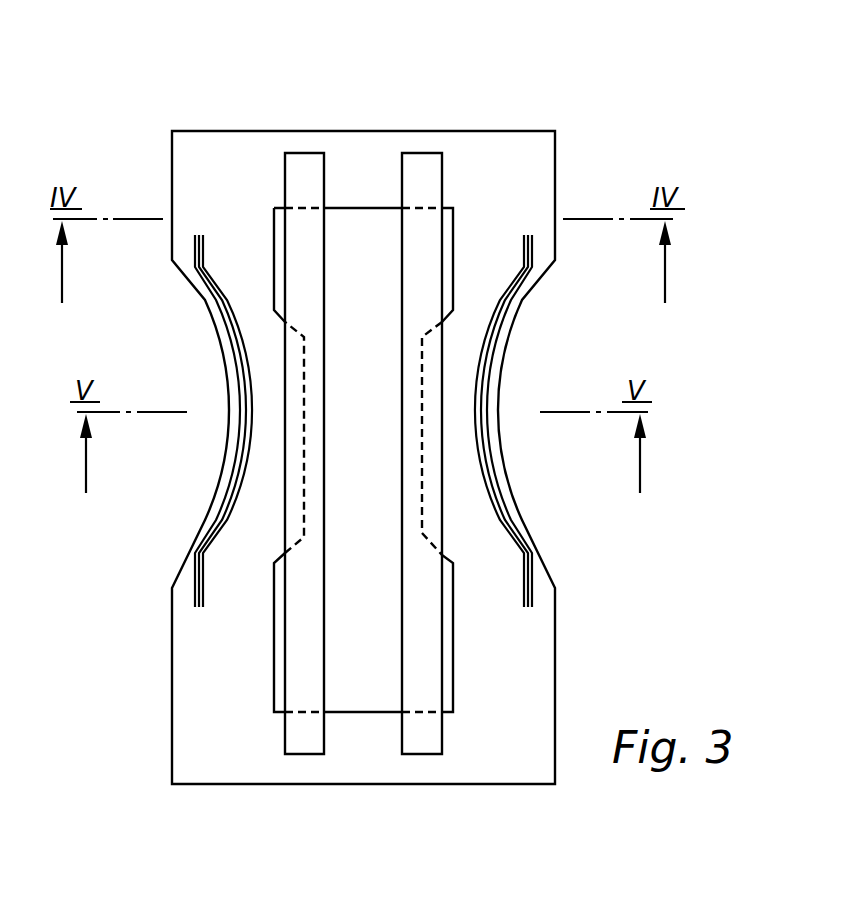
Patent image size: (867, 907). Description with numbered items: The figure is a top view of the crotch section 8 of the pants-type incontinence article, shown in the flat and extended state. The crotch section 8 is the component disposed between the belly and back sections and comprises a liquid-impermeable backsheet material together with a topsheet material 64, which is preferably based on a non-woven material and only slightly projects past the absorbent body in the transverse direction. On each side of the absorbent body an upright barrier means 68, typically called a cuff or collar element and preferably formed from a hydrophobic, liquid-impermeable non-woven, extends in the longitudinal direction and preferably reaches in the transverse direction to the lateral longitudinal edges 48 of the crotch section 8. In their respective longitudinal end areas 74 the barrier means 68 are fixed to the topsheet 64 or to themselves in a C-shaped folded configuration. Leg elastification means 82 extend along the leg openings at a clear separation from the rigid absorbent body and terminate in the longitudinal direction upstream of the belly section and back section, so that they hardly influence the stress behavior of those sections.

The crotch section 8 is at (387, 408).
The lateral longitudinal edges 48 is at (556, 627).
The topsheet material 64 is at (386, 398).
The upright barrier means 68 is at (409, 409).
The longitudinal end areas 74 is at (435, 176).
The leg elastification means 82 is at (224, 316).